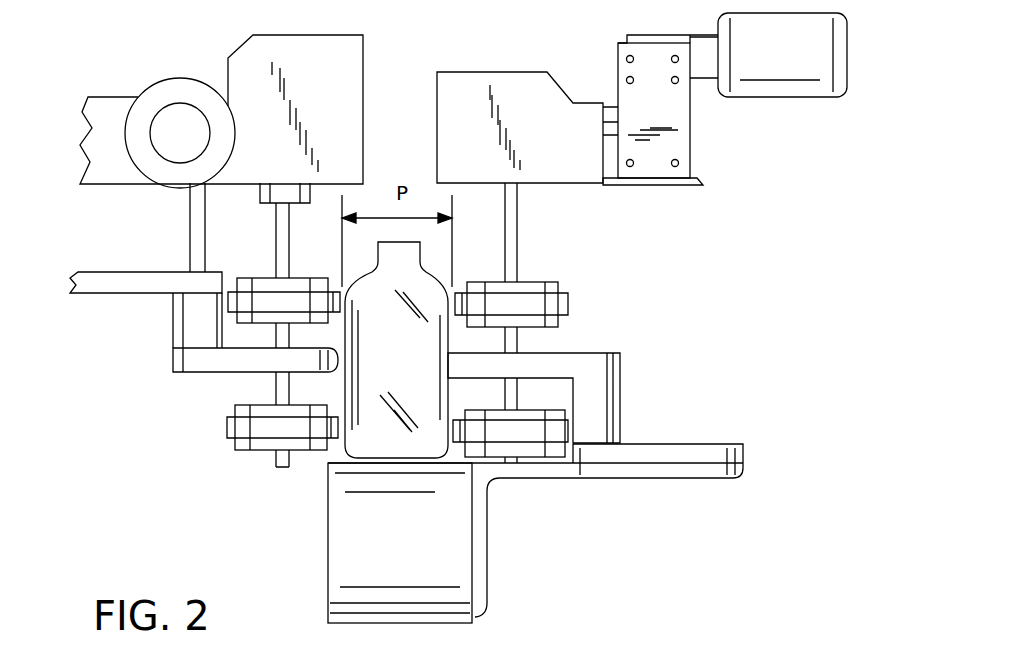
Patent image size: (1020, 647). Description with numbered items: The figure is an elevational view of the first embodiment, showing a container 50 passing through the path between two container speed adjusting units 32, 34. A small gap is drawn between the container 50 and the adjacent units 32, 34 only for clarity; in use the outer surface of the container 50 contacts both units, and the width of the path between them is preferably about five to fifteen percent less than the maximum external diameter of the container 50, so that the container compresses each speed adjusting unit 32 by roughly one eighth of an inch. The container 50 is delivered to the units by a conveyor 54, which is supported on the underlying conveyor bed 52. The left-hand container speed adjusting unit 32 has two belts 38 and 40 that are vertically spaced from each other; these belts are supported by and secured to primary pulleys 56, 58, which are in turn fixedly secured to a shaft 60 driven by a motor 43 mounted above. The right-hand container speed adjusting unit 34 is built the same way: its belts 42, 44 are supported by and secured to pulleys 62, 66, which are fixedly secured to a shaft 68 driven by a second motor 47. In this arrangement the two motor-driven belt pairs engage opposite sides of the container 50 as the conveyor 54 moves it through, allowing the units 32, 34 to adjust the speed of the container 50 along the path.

The container speed adjusting unit 32 is at (180, 378).
The container speed adjusting unit 34 is at (628, 340).
The belt 38 is at (253, 302).
The belt 40 is at (237, 432).
The belt 42 is at (565, 300).
The motor 43 is at (172, 105).
The belt 44 is at (522, 444).
The motor 47 is at (815, 90).
The container 50 is at (387, 376).
The conveyor bed 52 is at (327, 557).
The conveyor 54 is at (328, 475).
The primary pulley 56 is at (270, 282).
The primary pulley 58 is at (257, 445).
The shaft 60 is at (280, 238).
The pulley 62 is at (530, 277).
The pulley 66 is at (547, 415).
The shaft 68 is at (520, 218).